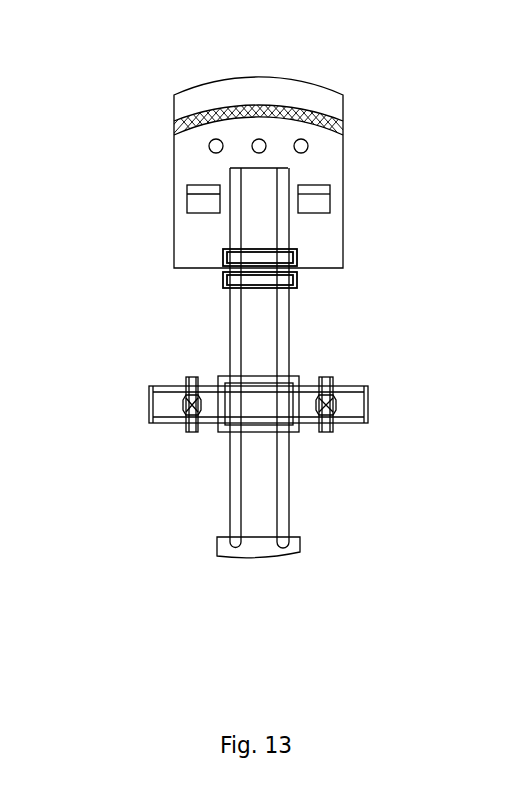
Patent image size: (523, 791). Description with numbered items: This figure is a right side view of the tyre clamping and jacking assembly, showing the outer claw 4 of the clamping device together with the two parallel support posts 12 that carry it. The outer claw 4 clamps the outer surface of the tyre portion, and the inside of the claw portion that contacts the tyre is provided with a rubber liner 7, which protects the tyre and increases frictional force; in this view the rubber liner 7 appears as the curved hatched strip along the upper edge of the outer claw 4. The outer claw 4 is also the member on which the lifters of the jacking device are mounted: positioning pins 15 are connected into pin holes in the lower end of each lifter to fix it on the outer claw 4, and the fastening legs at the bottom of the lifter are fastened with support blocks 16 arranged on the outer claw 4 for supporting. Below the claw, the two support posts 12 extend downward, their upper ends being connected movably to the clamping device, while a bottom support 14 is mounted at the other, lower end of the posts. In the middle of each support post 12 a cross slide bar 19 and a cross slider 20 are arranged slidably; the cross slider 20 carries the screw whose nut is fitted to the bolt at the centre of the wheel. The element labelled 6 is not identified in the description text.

The outer claw 4 is at (187, 238).
The rubber liner 7 is at (200, 117).
The positioning pins 15 is at (313, 142).
The support blocks 16 is at (334, 200).
The support posts 12 is at (228, 320).
The cross slide bar 19 is at (347, 383).
The sliding block 6 is at (208, 432).
The cross slider 20 is at (325, 433).
The bottom support 14 is at (233, 559).